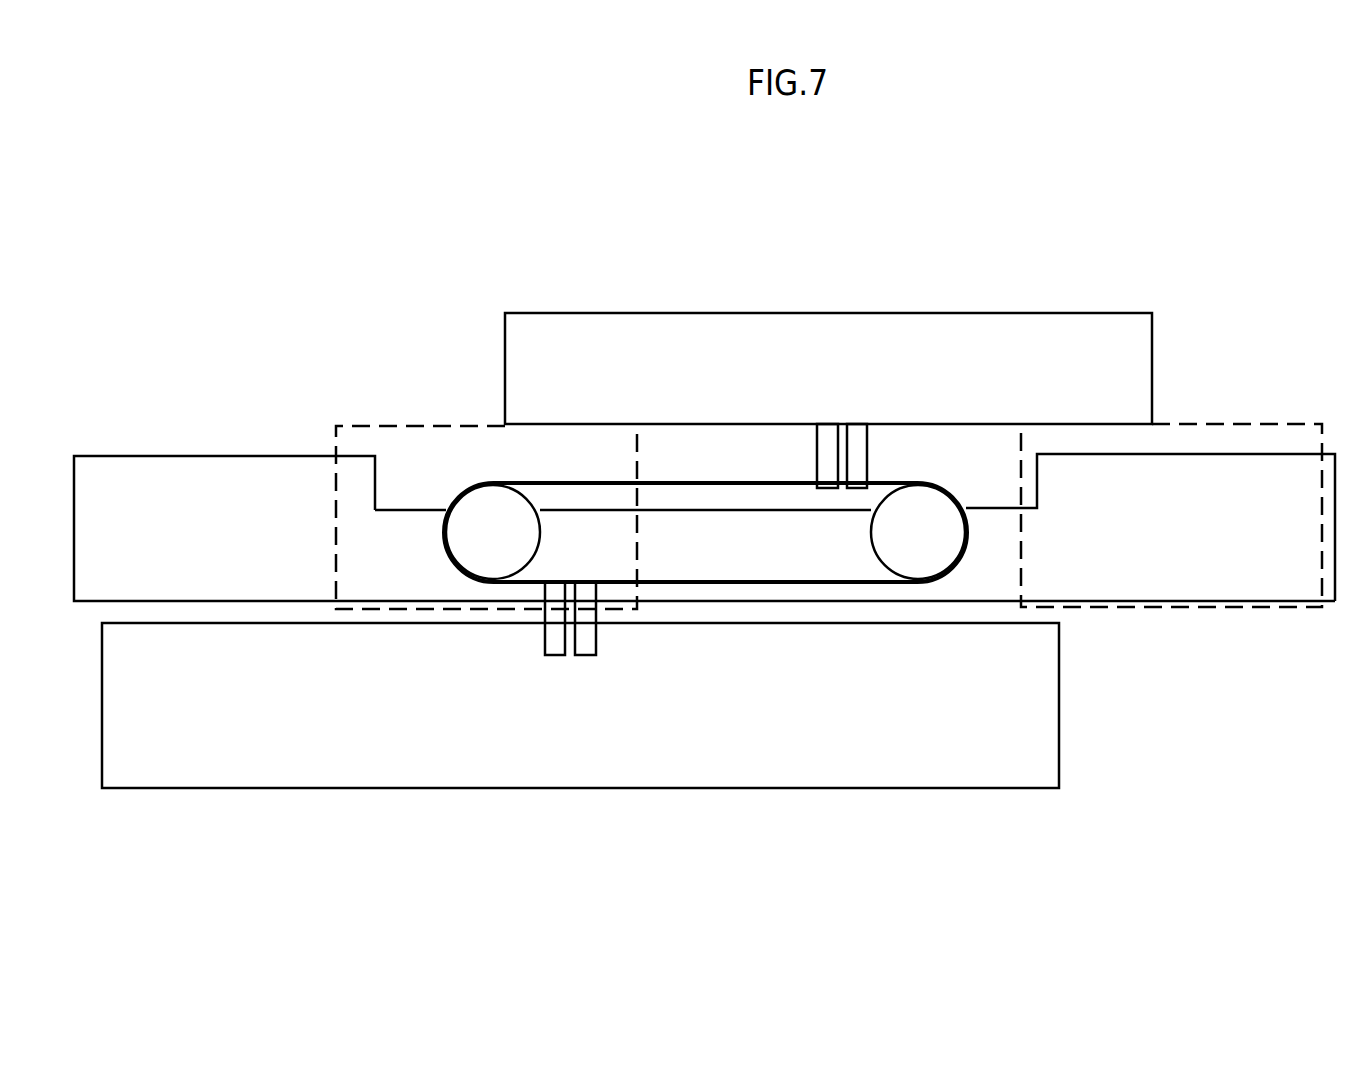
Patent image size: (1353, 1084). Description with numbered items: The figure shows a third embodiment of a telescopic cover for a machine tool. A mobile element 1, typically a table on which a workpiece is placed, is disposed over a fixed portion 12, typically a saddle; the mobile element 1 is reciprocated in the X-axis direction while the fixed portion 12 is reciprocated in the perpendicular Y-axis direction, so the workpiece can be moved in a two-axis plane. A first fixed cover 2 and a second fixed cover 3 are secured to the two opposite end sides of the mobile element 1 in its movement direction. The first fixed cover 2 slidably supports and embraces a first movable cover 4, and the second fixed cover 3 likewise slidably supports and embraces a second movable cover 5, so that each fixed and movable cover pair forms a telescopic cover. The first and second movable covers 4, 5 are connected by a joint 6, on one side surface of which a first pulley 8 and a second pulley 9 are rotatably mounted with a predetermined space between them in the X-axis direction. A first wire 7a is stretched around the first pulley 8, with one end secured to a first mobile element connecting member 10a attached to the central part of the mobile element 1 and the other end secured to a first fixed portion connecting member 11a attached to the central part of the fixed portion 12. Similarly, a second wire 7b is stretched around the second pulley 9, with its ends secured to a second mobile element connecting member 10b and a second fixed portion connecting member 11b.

The mobile element 1 is at (1080, 313).
The first fixed cover 2 is at (443, 425).
The second fixed cover 3 is at (1213, 423).
The first movable cover 4 is at (280, 456).
The second movable cover 5 is at (1240, 453).
The joint 6 is at (985, 545).
The first wire 7a is at (719, 481).
The second wire 7b is at (732, 584).
The first pulley 8 is at (507, 507).
The second pulley 9 is at (899, 507).
The first mobile element connecting member 10a is at (813, 450).
The second mobile element connecting member 10b is at (873, 450).
The first fixed portion connecting member 11a is at (555, 656).
The second fixed portion connecting member 11b is at (587, 657).
The fixed portion 12 is at (967, 789).